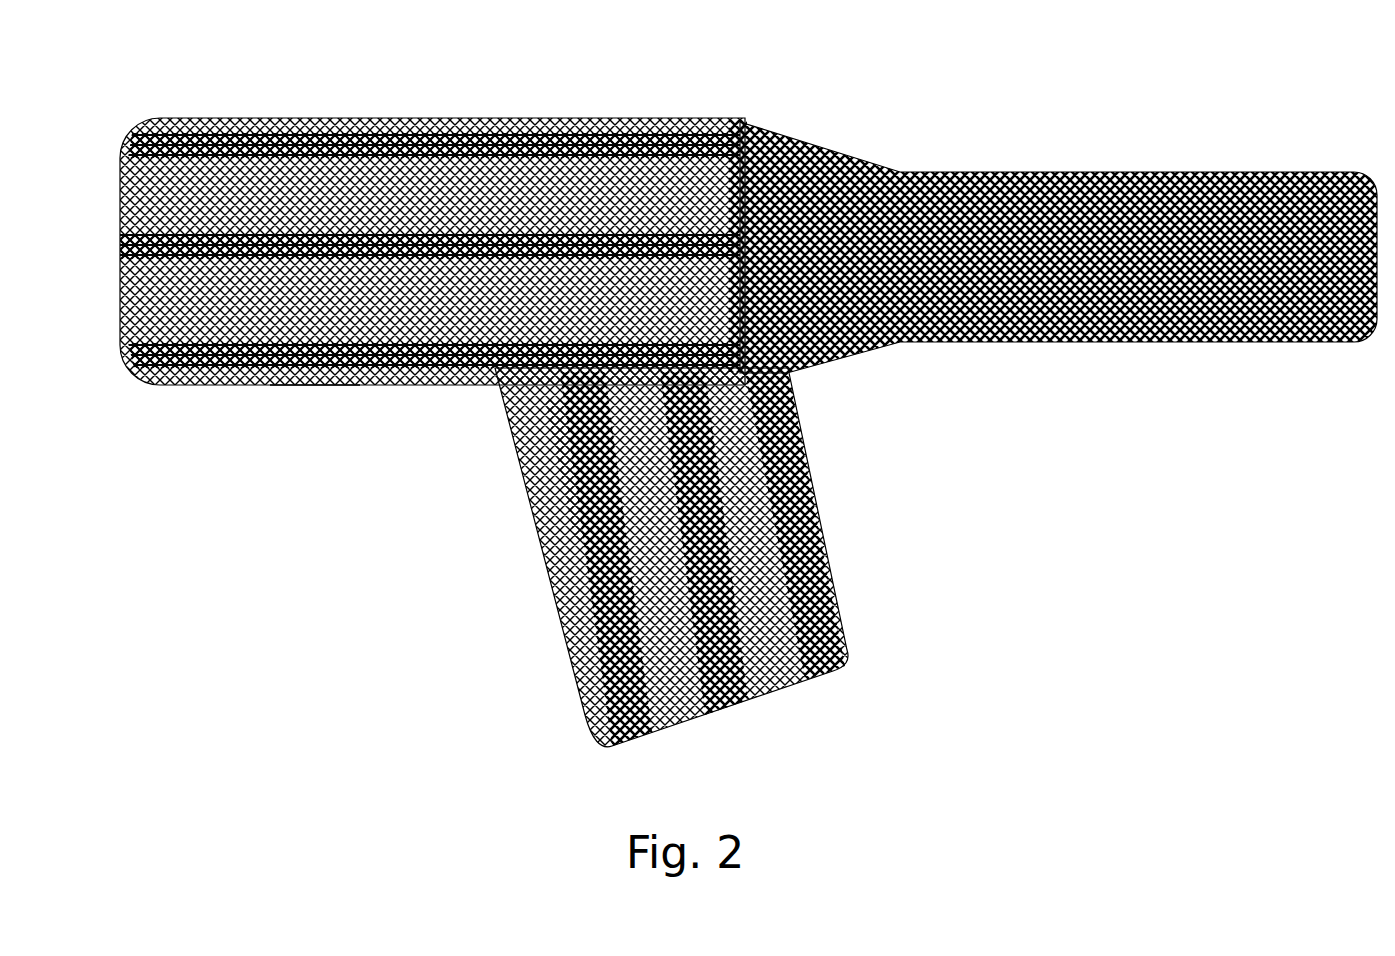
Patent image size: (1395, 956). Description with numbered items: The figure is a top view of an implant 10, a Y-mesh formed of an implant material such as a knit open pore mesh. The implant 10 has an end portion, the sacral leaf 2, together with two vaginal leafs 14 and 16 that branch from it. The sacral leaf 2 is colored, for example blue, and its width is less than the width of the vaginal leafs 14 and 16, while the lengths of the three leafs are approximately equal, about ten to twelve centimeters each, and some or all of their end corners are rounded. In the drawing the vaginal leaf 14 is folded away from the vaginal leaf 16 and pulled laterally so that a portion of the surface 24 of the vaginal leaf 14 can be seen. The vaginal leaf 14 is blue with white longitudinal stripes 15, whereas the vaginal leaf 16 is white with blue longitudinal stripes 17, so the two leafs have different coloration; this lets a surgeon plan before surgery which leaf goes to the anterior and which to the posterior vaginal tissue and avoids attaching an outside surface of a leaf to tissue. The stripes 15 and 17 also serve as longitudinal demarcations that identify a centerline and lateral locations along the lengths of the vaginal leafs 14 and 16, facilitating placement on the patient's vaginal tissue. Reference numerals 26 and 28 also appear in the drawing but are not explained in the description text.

The implant 10 is at (402, 72).
The sacral leaf 2 is at (1069, 174).
The vaginal leaf 14 is at (687, 587).
The longitudinal stripes 15 is at (627, 742).
The vaginal leaf 16 is at (318, 387).
The longitudinal stripes 17 is at (122, 140).
The surface 24 is at (620, 543).
The strap portion 26 is at (285, 218).
The seam 28 is at (740, 122).